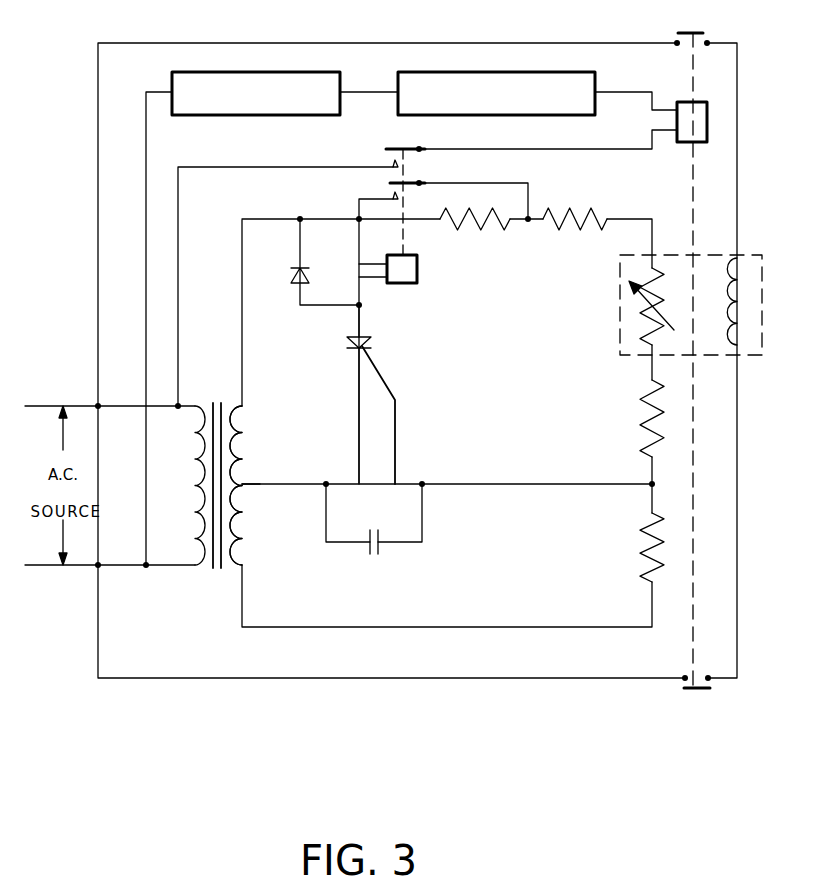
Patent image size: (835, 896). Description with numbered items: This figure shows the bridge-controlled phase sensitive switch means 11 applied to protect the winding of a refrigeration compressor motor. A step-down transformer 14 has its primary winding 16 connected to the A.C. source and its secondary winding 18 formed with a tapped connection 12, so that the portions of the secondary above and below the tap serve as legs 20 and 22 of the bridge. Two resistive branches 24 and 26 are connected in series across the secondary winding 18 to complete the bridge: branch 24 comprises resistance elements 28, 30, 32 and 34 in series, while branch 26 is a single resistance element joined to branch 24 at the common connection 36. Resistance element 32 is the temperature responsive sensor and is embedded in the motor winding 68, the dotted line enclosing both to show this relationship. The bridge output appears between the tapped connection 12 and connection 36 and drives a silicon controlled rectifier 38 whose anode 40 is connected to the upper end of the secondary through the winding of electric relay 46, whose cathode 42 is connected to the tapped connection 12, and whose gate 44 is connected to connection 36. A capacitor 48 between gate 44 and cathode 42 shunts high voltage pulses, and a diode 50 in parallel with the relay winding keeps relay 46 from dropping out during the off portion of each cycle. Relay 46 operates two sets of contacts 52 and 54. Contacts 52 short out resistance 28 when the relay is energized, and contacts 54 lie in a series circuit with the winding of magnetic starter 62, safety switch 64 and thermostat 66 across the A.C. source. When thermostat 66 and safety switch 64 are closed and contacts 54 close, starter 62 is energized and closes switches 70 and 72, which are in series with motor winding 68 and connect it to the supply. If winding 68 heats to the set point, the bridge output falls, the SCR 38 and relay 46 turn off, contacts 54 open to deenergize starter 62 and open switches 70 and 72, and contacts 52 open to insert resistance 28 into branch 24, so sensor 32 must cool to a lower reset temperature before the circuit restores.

The phase sensitive switch means 11 is at (496, 459).
The tapped connection 12 is at (243, 484).
The transformer 14 is at (218, 568).
The primary winding 16 is at (200, 448).
The secondary winding 18 is at (233, 530).
The leg 20 is at (235, 446).
The leg 22 is at (233, 500).
The branch 24 is at (361, 224).
The resistive branch 26 is at (646, 556).
The resistance element 28 is at (470, 228).
The resistance element 30 is at (570, 228).
The temperature responsive resistance element 32 is at (645, 316).
The resistance element 34 is at (646, 409).
The connection 36 is at (650, 488).
The silicon controlled rectifier 38 is at (372, 342).
The anode 40 is at (358, 319).
The cathode 42 is at (358, 362).
The gate 44 is at (385, 382).
The electric relay 46 is at (418, 270).
The capacitor 48 is at (381, 550).
The diode 50 is at (297, 285).
The switch contacts 52 is at (390, 193).
The switch contacts 54 is at (388, 156).
The magnetic starter 62 is at (676, 121).
The safety switch 64 is at (503, 71).
The thermostat 66 is at (244, 71).
The motor winding 68 is at (755, 292).
The switch 70 is at (676, 31).
The switch 72 is at (672, 689).